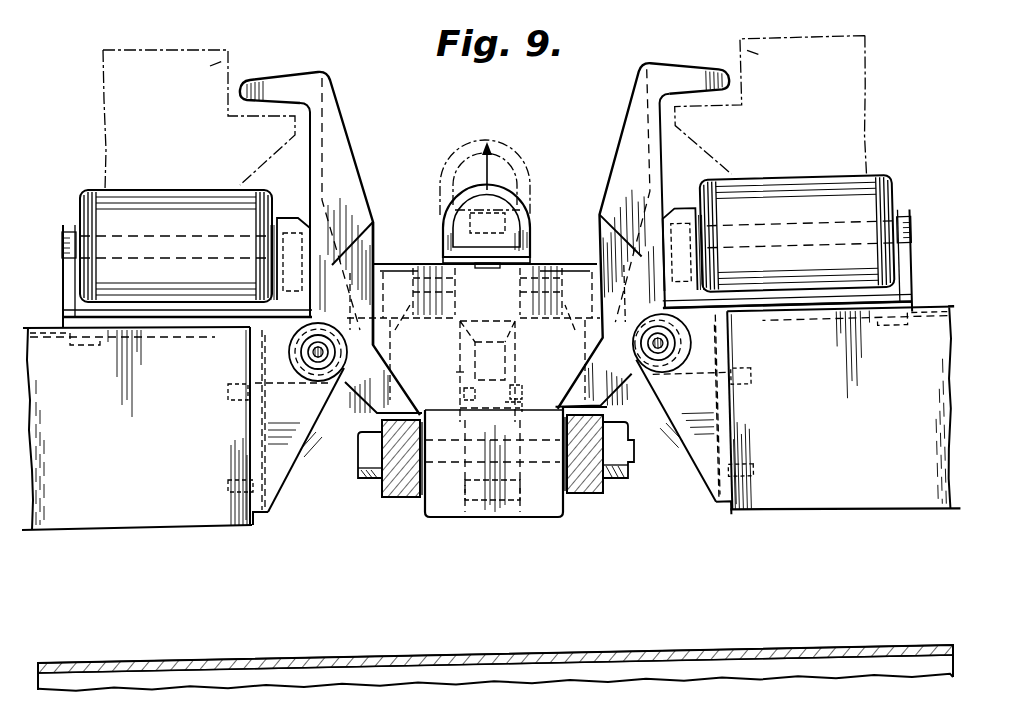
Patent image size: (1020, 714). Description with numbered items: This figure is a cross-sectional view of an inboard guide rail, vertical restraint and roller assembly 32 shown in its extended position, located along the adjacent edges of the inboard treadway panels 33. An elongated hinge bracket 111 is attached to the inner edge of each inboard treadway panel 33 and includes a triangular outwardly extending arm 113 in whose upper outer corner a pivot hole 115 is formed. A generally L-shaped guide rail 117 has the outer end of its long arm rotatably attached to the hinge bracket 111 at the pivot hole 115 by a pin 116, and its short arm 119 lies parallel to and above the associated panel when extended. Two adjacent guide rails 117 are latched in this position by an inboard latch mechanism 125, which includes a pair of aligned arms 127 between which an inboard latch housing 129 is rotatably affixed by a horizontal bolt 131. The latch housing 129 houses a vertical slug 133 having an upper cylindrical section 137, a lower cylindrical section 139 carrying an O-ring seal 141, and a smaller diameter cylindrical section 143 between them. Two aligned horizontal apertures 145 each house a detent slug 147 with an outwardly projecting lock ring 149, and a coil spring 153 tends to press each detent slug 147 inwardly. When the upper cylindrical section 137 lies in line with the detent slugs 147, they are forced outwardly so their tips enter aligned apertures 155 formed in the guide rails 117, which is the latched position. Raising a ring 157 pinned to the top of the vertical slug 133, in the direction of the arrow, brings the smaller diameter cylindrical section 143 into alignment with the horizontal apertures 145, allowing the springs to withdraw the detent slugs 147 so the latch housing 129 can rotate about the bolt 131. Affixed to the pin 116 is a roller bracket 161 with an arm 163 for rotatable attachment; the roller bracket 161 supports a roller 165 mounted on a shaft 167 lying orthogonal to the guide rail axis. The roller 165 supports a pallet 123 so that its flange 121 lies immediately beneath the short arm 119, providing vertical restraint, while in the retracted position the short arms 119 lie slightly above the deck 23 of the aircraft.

The deck 23 is at (840, 646).
The inboard guide rail, vertical restraint and roller assembly 32 is at (388, 160).
The inboard treadway panel 33 is at (210, 518).
The hinge bracket 111 is at (279, 505).
The arm 113 is at (289, 468).
The pivot hole 115 is at (318, 368).
The pin 116 is at (303, 348).
The guide rail 117 is at (345, 162).
The short arm 119 is at (274, 88).
The flange 121 is at (328, 120).
The pallet 123 is at (236, 52).
The inboard latch mechanism 125 is at (535, 177).
The aligned arm 127 is at (398, 497).
The inboard latch housing 129 is at (544, 508).
The horizontal bolt 131 is at (369, 487).
The vertical slug 133 is at (521, 345).
The upper cylindrical section 137 is at (535, 260).
The lower cylindrical section 139 is at (523, 405).
The O-ring seal 141 is at (528, 393).
The smaller diameter cylindrical section 143 is at (462, 378).
The horizontal aperture 145 is at (460, 352).
The detent slug 147 is at (433, 320).
The lock ring 149 is at (402, 260).
The coil spring 153 is at (398, 350).
The aligned aperture 155 is at (379, 213).
The ring 157 is at (452, 203).
The roller bracket 161 is at (63, 291).
The arm 163 is at (292, 217).
The roller 165 is at (96, 190).
The shaft 167 is at (62, 245).